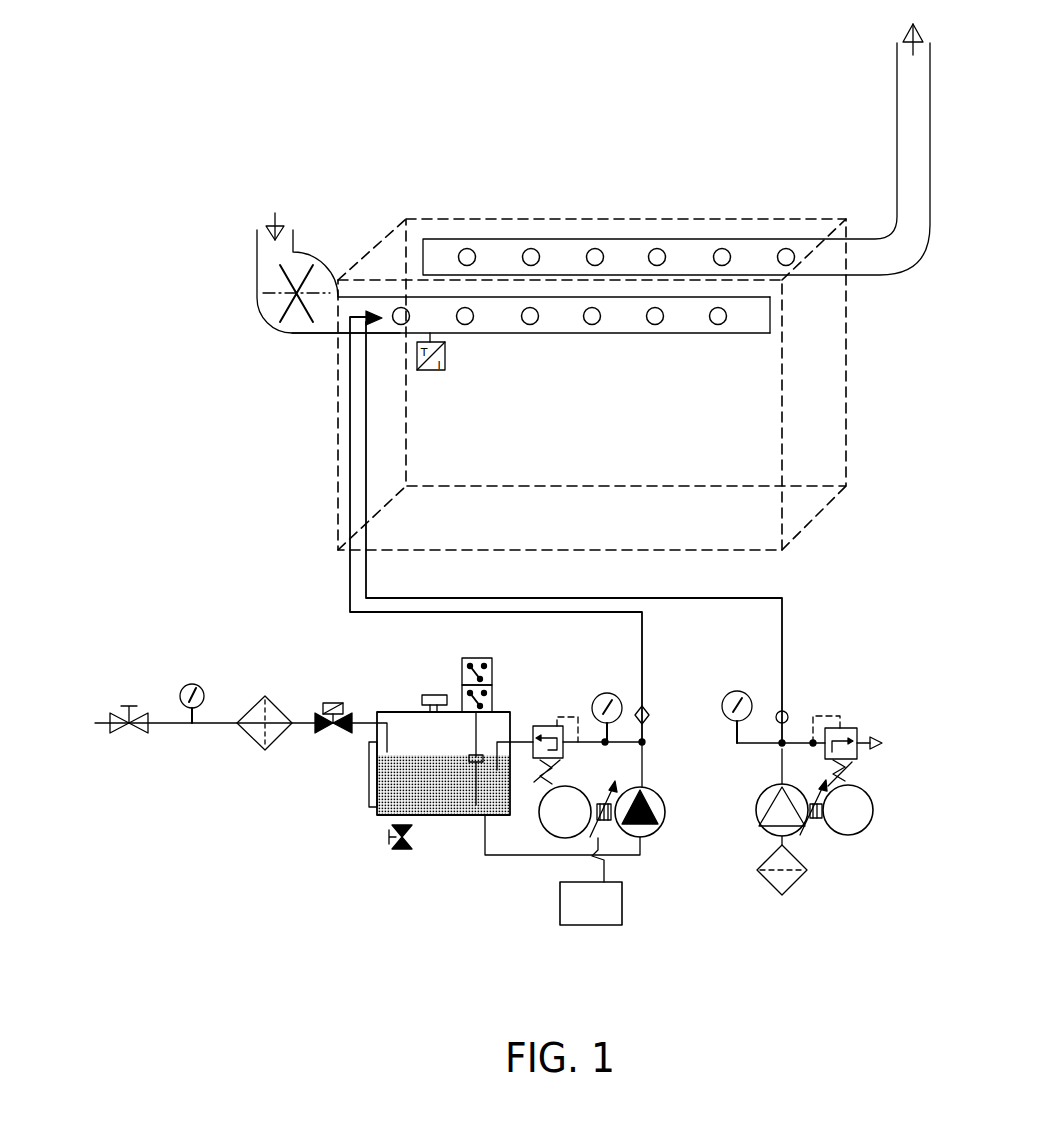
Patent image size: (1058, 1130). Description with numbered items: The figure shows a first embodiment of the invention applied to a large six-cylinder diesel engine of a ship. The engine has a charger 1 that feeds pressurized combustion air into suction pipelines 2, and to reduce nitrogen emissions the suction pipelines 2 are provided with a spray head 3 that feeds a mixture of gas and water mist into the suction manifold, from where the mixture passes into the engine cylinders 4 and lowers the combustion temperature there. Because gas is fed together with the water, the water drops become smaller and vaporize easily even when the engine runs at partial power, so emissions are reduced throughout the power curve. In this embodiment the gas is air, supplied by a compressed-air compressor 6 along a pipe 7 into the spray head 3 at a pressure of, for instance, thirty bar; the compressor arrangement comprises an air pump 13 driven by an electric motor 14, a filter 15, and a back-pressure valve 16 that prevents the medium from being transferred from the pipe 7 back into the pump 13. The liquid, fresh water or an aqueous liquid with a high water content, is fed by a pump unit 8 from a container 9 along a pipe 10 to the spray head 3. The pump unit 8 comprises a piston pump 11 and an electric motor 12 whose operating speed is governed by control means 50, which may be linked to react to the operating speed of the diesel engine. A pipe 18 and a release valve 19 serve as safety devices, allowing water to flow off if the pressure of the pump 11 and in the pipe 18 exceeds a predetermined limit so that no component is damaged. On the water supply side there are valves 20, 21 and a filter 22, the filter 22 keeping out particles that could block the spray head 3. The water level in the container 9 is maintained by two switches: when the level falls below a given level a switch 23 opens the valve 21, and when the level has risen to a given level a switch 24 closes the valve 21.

The charger 1 is at (280, 293).
The suction pipelines 2 is at (327, 322).
The spray head 3 is at (371, 314).
The engine cylinders 4 is at (716, 333).
The compressed-air compressor 6 is at (853, 835).
The pipe 7 is at (365, 402).
The pump unit 8 is at (537, 847).
The container 9 is at (388, 790).
The pipe 10 is at (350, 468).
The piston pump 11 is at (667, 817).
The electric motor 12 is at (540, 813).
The air pump 13 is at (756, 808).
The electric motor 14 is at (818, 833).
The filter 15 is at (768, 888).
The back-pressure valve 16 is at (786, 715).
The pipe 18 is at (593, 737).
The release valve 19 is at (548, 727).
The valve 20 is at (131, 735).
The valve 21 is at (317, 715).
The filter 22 is at (255, 705).
The switch 23 is at (462, 692).
The switch 24 is at (463, 673).
The control means 50 is at (568, 900).